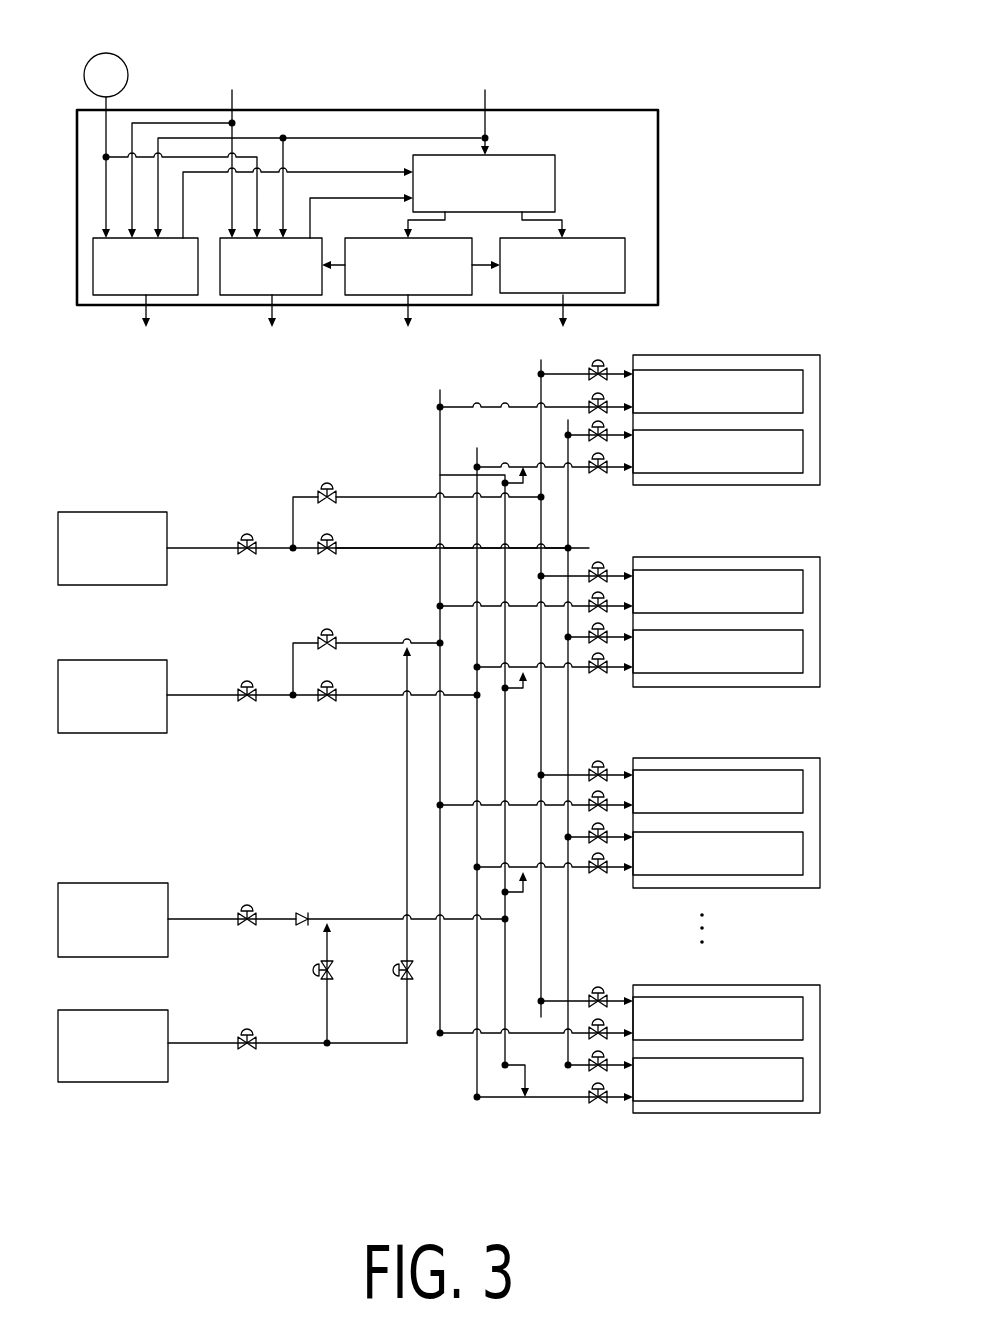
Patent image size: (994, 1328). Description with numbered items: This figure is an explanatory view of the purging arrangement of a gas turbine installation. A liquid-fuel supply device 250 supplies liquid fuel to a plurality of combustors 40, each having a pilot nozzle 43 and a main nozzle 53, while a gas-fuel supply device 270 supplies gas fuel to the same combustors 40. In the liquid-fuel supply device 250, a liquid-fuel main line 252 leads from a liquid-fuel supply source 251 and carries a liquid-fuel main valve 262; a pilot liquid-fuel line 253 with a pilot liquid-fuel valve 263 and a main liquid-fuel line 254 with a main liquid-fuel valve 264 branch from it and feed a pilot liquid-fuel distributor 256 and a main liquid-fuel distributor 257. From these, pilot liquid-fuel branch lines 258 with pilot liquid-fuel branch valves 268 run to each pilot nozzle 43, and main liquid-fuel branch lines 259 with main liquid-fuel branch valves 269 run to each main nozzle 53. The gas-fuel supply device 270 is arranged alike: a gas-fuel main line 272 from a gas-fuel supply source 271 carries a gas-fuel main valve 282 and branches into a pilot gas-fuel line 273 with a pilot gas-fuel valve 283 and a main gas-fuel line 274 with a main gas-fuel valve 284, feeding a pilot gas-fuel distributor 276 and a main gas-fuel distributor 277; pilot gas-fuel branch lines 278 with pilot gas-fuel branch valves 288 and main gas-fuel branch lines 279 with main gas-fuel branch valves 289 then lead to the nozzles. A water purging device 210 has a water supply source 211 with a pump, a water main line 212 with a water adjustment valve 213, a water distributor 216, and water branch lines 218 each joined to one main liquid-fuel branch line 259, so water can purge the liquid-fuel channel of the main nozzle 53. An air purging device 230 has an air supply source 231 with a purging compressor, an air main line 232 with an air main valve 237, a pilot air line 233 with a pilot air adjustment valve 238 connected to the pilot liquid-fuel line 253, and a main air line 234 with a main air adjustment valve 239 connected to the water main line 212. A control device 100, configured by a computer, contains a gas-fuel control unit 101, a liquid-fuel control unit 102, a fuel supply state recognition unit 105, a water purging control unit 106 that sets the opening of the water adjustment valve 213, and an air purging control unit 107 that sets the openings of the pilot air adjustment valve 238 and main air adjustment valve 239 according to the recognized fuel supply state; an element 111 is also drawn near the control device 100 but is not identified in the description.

The control device 100 is at (623, 178).
The gas-fuel control unit 101 is at (110, 295).
The liquid-fuel control unit 102 is at (237, 295).
The fuel supply state recognition unit 105 is at (528, 155).
The water purging control unit 106 is at (368, 295).
The air purging control unit 107 is at (625, 265).
The power output detector (PW) 111 is at (137, 40).
The combustor 40 is at (782, 355).
The pilot nozzle 43 is at (723, 370).
The main nozzle 53 is at (760, 473).
The water purging device 210 is at (190, 926).
The water supply source 211 is at (113, 883).
The water main line 212 is at (243, 910).
The water adjustment valve 213 is at (249, 927).
The water distributor 216 is at (503, 1050).
The water branch line 218 is at (440, 474).
The air purging device 230 is at (190, 1050).
The air supply source 231 is at (113, 1010).
The air main line 232 is at (243, 1034).
The pilot air line 233 is at (407, 1030).
The main air line 234 is at (327, 1030).
The air main valve 237 is at (249, 1051).
The pilot air adjustment valve 238 is at (397, 970).
The main air adjustment valve 239 is at (317, 970).
The liquid-fuel supply device 250 is at (188, 704).
The liquid-fuel supply source 251 is at (113, 660).
The liquid-fuel main line 252 is at (243, 686).
The pilot liquid-fuel line 253 is at (291, 660).
The main liquid-fuel line 254 is at (303, 703).
The pilot liquid-fuel distributor 256 is at (438, 403).
The main liquid-fuel distributor 257 is at (474, 450).
The pilot liquid-fuel branch line 258 is at (540, 362).
The main liquid-fuel branch line 259 is at (498, 462).
The liquid-fuel main valve 262 is at (249, 703).
The pilot liquid-fuel valve 263 is at (327, 632).
The main liquid-fuel valve 264 is at (338, 702).
The pilot liquid-fuel branch valve 268 is at (604, 397).
The main liquid-fuel branch valve 269 is at (600, 476).
The gas-fuel supply device 270 is at (188, 556).
The gas-fuel supply source 271 is at (113, 512).
The gas-fuel main line 272 is at (243, 539).
The pilot gas-fuel line 273 is at (291, 512).
The main gas-fuel line 274 is at (312, 543).
The pilot gas-fuel distributor 276 is at (541, 975).
The main gas-fuel distributor 277 is at (545, 1036).
The pilot gas-fuel branch line 278 is at (565, 375).
The main gas-fuel branch line 279 is at (580, 432).
The gas-fuel main valve 282 is at (249, 555).
The pilot gas-fuel valve 283 is at (327, 486).
The main gas-fuel valve 284 is at (338, 555).
The pilot gas-fuel branch valve 288 is at (600, 364).
The main gas-fuel branch valve 289 is at (610, 441).